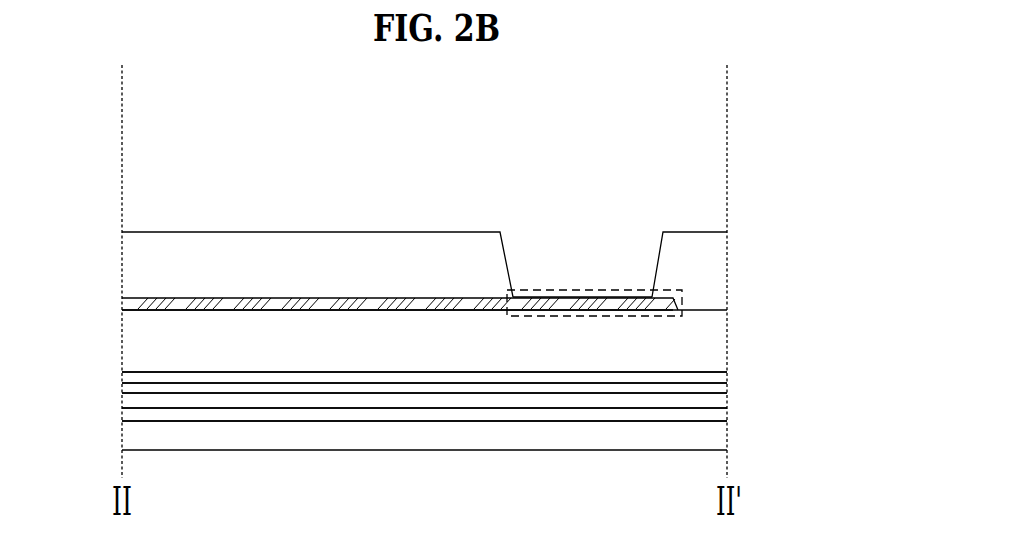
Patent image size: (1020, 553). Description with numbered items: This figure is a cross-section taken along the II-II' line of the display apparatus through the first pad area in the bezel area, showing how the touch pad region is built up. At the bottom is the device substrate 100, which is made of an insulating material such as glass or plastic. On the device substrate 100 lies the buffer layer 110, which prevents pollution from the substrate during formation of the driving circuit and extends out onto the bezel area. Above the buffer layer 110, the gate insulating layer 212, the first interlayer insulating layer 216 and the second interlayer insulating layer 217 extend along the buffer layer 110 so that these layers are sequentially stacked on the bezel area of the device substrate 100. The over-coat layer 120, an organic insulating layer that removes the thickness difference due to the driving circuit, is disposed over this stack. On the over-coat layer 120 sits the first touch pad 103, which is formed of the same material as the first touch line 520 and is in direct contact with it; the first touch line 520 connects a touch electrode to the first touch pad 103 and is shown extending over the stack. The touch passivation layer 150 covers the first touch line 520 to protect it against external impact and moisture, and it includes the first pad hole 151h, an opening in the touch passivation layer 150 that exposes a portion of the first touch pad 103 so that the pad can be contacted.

The device substrate 100 is at (717, 437).
The buffer layer 110 is at (131, 414).
The over-coat layer 120 is at (131, 347).
The touch passivation layer 150 is at (134, 268).
The first pad hole 151h is at (662, 262).
The first touch pad 103 is at (660, 315).
The gate insulating layer 212 is at (717, 401).
The first interlayer insulating layer 216 is at (134, 388).
The second interlayer insulating layer 217 is at (717, 379).
The first touch line 520 is at (134, 301).